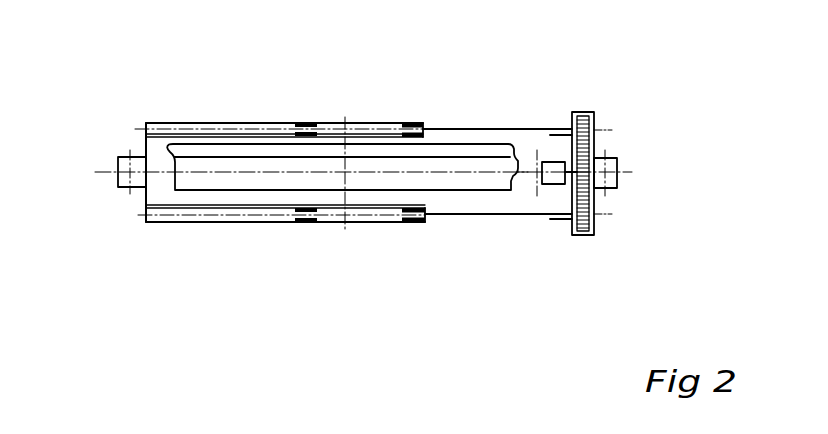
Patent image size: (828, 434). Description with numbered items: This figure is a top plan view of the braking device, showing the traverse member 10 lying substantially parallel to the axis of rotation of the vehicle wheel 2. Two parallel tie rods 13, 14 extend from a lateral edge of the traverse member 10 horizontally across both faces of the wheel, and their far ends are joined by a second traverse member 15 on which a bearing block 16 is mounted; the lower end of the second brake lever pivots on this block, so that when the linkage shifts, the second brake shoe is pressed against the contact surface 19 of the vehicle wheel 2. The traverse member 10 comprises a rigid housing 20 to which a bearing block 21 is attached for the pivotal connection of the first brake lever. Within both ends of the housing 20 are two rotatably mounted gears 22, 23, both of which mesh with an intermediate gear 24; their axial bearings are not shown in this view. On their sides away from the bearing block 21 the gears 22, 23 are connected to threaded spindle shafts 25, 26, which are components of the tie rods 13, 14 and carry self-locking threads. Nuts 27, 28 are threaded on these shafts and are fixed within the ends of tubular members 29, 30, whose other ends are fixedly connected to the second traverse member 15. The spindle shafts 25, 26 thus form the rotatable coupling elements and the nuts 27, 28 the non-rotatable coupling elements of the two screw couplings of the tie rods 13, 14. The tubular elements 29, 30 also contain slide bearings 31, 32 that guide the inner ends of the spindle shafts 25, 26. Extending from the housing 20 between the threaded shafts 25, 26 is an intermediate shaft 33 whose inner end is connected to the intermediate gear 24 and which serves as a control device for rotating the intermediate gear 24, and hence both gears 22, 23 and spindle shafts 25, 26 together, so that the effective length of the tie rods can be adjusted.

The vehicle wheel 2 is at (458, 184).
The traverse member 10 is at (604, 205).
The tie rod 13 is at (370, 232).
The tie rod 14 is at (390, 117).
The second traverse member 15 is at (146, 198).
The bearing block 16 is at (118, 158).
The contact surface 19 is at (512, 182).
The rigid housing 20 is at (594, 125).
The bearing block 21 is at (617, 168).
The gear 22 is at (595, 227).
The gear 23 is at (592, 111).
The intermediate gear 24 is at (594, 150).
The threaded spindle shaft 25 is at (513, 216).
The threaded spindle shaft 26 is at (487, 127).
The nut 27 is at (415, 223).
The nut 28 is at (417, 123).
The tubular member 29 is at (200, 222).
The tubular member 30 is at (197, 123).
The slide bearing 31 is at (305, 222).
The slide bearing 32 is at (295, 123).
The intermediate shaft 33 is at (564, 185).